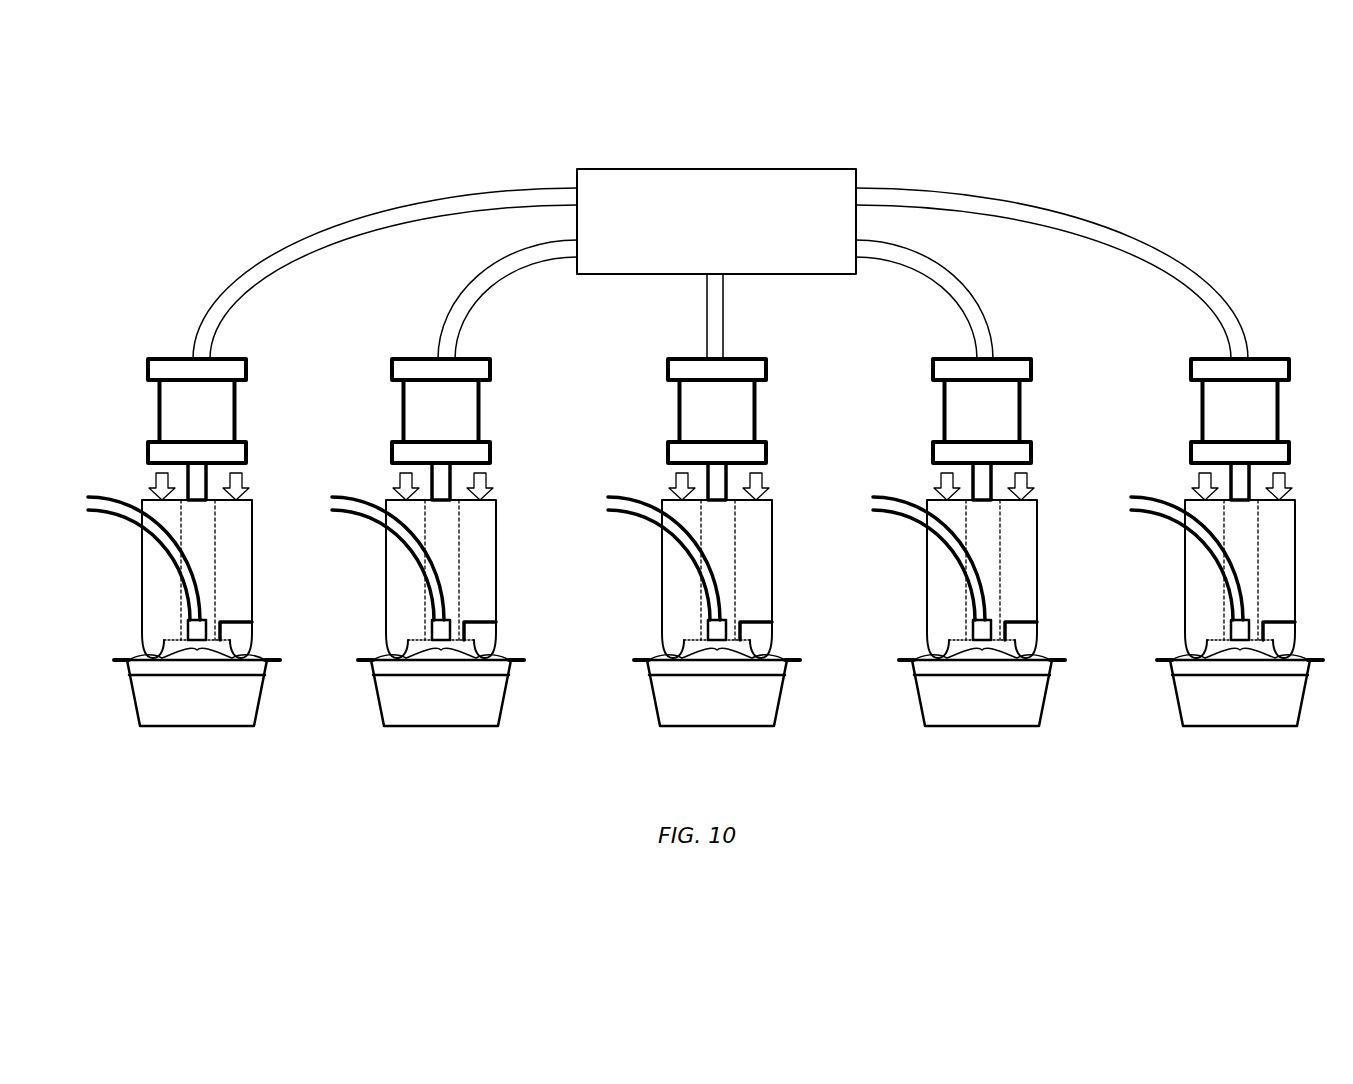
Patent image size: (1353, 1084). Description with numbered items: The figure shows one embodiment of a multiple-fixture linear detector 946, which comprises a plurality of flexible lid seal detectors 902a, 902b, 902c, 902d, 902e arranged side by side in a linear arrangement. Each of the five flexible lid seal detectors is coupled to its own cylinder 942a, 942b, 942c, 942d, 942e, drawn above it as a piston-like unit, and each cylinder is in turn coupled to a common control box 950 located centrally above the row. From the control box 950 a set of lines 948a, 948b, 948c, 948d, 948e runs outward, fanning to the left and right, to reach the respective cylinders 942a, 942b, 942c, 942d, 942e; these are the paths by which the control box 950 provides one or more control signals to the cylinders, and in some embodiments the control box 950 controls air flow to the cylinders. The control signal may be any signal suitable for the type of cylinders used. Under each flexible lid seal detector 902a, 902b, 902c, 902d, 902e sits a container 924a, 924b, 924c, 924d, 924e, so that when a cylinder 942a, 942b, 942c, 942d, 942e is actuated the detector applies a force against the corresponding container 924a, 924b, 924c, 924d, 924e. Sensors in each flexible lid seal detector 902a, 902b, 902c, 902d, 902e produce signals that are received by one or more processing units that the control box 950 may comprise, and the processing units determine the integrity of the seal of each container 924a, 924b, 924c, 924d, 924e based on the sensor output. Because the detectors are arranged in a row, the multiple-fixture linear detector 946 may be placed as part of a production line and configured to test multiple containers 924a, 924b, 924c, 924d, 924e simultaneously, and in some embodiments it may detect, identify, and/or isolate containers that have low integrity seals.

The control box 950 is at (664, 169).
The multiple-fixture linear detector 946 is at (733, 252).
The communication link 948a is at (376, 210).
The communication link 948b is at (453, 303).
The communication link 948c is at (706, 320).
The communication link 948d is at (984, 310).
The communication link 948e is at (1158, 248).
The actuator 942a is at (246, 359).
The actuator 942b is at (490, 359).
The actuator 942c is at (736, 359).
The actuator 942d is at (956, 359).
The actuator 942e is at (1250, 359).
The flexible lid seal detector 902a is at (248, 426).
The flexible lid seal detector 902b is at (488, 426).
The flexible lid seal detector 902c is at (768, 426).
The flexible lid seal detector 902d is at (1040, 407).
The flexible lid seal detector 902e is at (1190, 350).
The container 924a is at (255, 718).
The container 924b is at (500, 718).
The container 924c is at (779, 712).
The container 924d is at (1047, 712).
The container 924e is at (1220, 722).